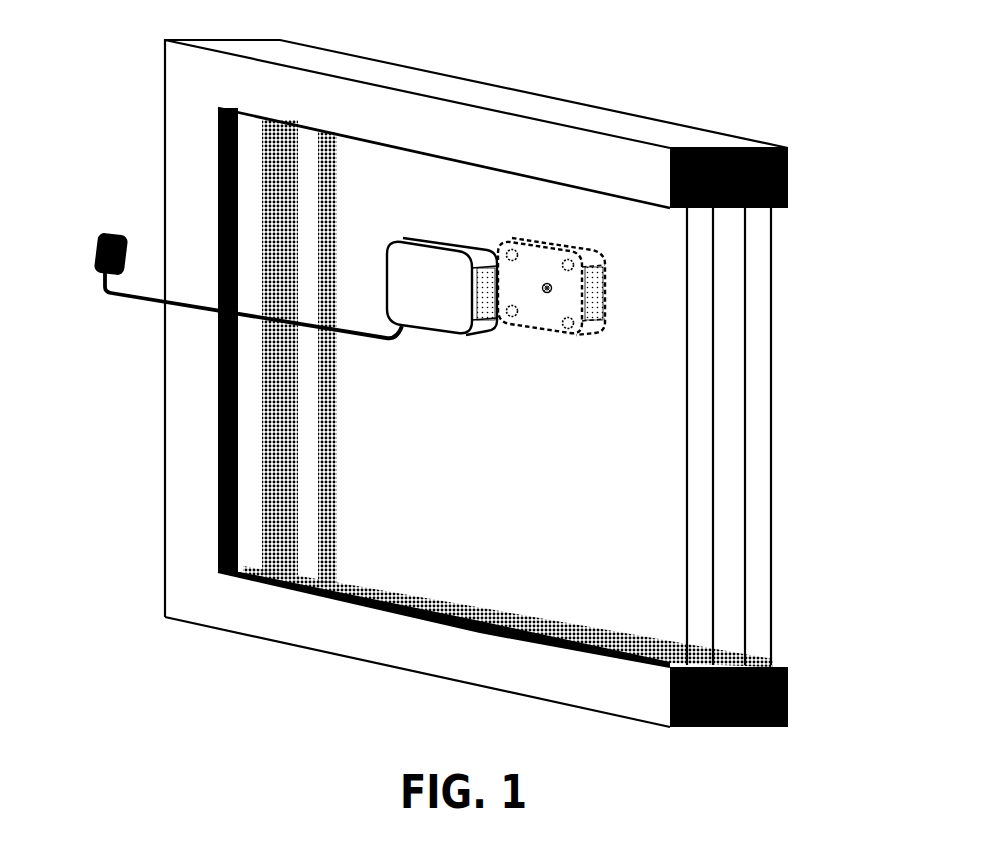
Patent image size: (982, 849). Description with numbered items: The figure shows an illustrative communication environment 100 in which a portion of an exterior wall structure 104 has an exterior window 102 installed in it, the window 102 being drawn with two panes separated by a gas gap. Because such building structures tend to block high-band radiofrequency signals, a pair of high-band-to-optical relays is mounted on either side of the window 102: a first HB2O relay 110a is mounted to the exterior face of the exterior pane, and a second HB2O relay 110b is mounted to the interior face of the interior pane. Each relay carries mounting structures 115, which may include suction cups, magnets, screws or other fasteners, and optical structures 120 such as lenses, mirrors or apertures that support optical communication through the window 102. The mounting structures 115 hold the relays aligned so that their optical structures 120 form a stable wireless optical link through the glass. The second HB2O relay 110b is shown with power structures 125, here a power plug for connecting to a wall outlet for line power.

The communication environment 100 is at (655, 52).
The exterior window 102 is at (835, 348).
The exterior wall structure 104 is at (788, 165).
The first HB2O relay 110a is at (531, 240).
The second HB2O relay 110b is at (432, 240).
The mounting structures 115 is at (571, 328).
The optical structures 120 is at (552, 286).
The power structures 125 is at (102, 232).